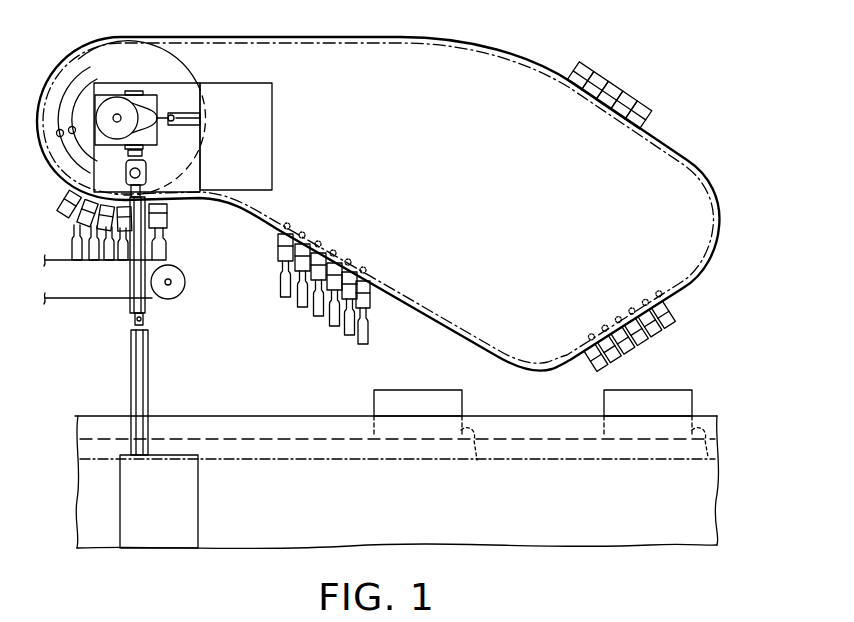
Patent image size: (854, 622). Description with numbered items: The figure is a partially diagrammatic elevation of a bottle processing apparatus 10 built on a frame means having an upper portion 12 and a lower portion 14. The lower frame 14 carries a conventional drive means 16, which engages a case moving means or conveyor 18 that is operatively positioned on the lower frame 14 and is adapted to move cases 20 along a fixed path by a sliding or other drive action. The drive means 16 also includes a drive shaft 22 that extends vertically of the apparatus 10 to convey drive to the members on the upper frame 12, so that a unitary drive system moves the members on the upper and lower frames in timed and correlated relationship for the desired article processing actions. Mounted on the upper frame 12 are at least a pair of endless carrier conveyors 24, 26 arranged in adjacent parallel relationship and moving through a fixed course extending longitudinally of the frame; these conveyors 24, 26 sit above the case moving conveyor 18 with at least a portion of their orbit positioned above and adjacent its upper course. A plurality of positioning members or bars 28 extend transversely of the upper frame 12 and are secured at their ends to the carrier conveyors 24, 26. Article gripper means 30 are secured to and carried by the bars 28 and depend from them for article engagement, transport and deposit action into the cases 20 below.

The apparatus 10 is at (265, 385).
The upper portion 12 is at (447, 332).
The lower portion 14 is at (88, 410).
The drive means 16 is at (160, 513).
The case moving means or conveyor 18 is at (476, 465).
The cases 20 is at (462, 403).
The drive shaft 22 is at (131, 351).
The endless carrier conveyor 24 is at (165, 101).
The endless carrier conveyor 26 is at (139, 40).
The positioning members or bars 28 is at (306, 236).
The article gripper means 30 is at (627, 86).